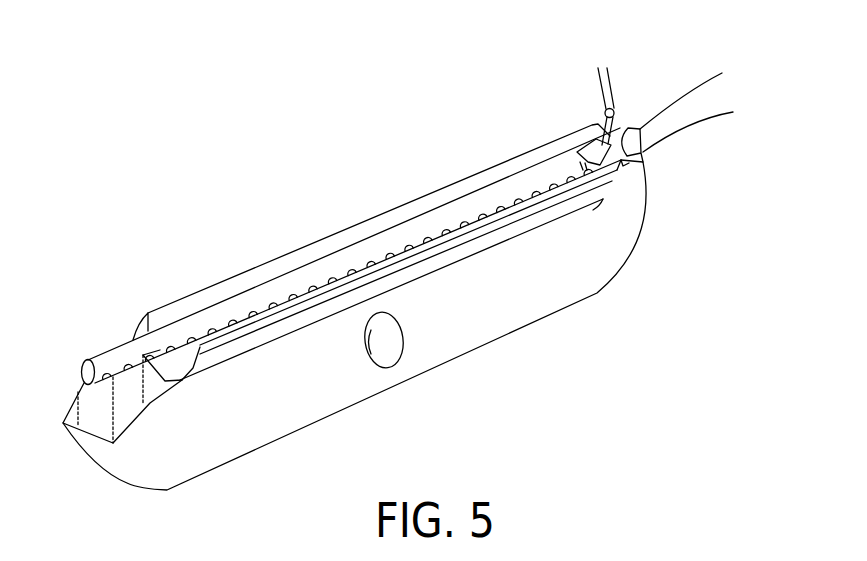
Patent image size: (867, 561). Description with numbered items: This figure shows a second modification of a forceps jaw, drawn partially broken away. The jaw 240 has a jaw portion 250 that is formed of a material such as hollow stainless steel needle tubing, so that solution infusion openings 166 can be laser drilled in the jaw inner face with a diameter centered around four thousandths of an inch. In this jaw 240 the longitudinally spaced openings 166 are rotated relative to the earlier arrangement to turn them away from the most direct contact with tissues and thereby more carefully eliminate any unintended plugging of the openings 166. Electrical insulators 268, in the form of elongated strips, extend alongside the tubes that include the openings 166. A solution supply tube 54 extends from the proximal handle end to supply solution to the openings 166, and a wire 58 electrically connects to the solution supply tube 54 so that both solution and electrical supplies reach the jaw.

The solution supply tube 54 is at (675, 128).
The wire 58 is at (610, 84).
The solution infusion openings 166 is at (462, 259).
The jaw 240 is at (257, 453).
The jaw portion 250 is at (506, 317).
The electrical insulators 268 is at (321, 240).